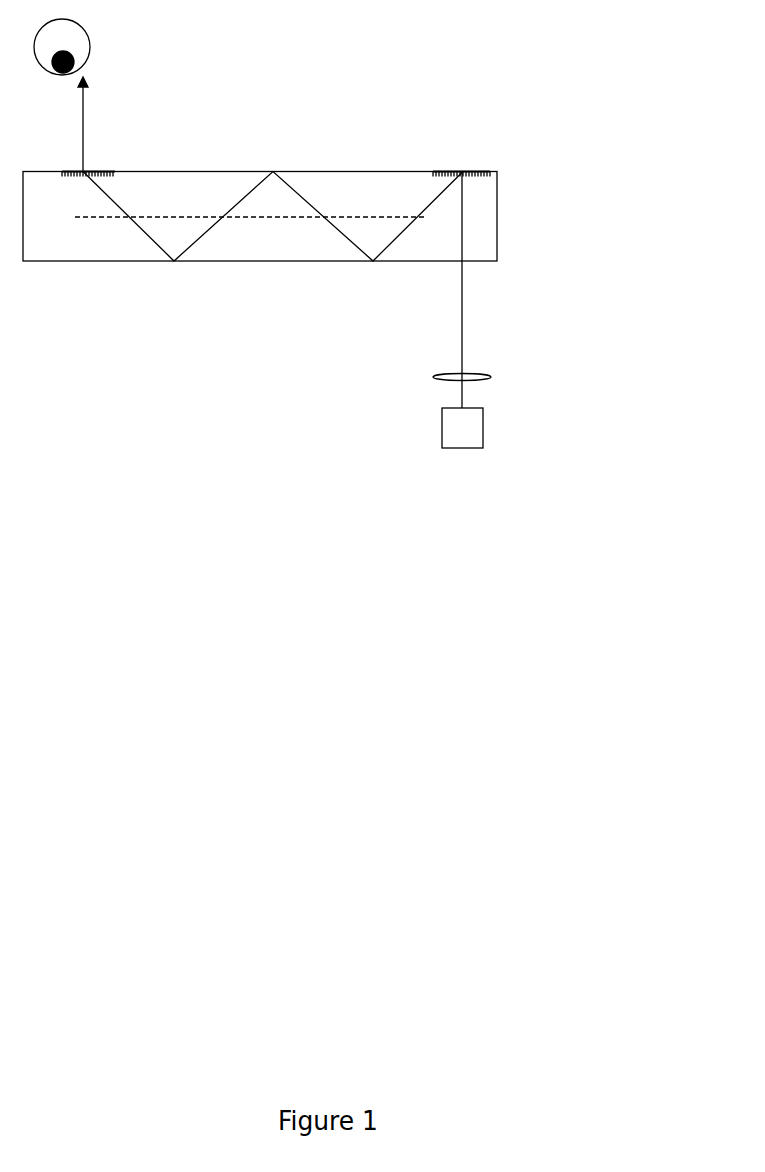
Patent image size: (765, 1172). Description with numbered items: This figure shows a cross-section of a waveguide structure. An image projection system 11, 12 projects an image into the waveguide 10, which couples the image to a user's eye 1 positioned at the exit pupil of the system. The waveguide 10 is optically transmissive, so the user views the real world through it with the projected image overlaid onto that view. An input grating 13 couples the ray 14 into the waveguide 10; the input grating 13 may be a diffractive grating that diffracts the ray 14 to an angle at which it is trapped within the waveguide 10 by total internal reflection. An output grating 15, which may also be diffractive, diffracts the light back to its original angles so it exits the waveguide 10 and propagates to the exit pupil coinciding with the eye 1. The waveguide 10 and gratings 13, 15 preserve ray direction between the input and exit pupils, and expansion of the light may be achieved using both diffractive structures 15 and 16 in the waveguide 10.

The eye 1 is at (115, 35).
The waveguide 10 is at (327, 160).
The image projection system 11 is at (475, 444).
The image projection system 12 is at (497, 375).
The input grating 13 is at (457, 170).
The ray 14 is at (467, 298).
The output grating 15 is at (96, 171).
The diffractive structure 16 is at (263, 222).